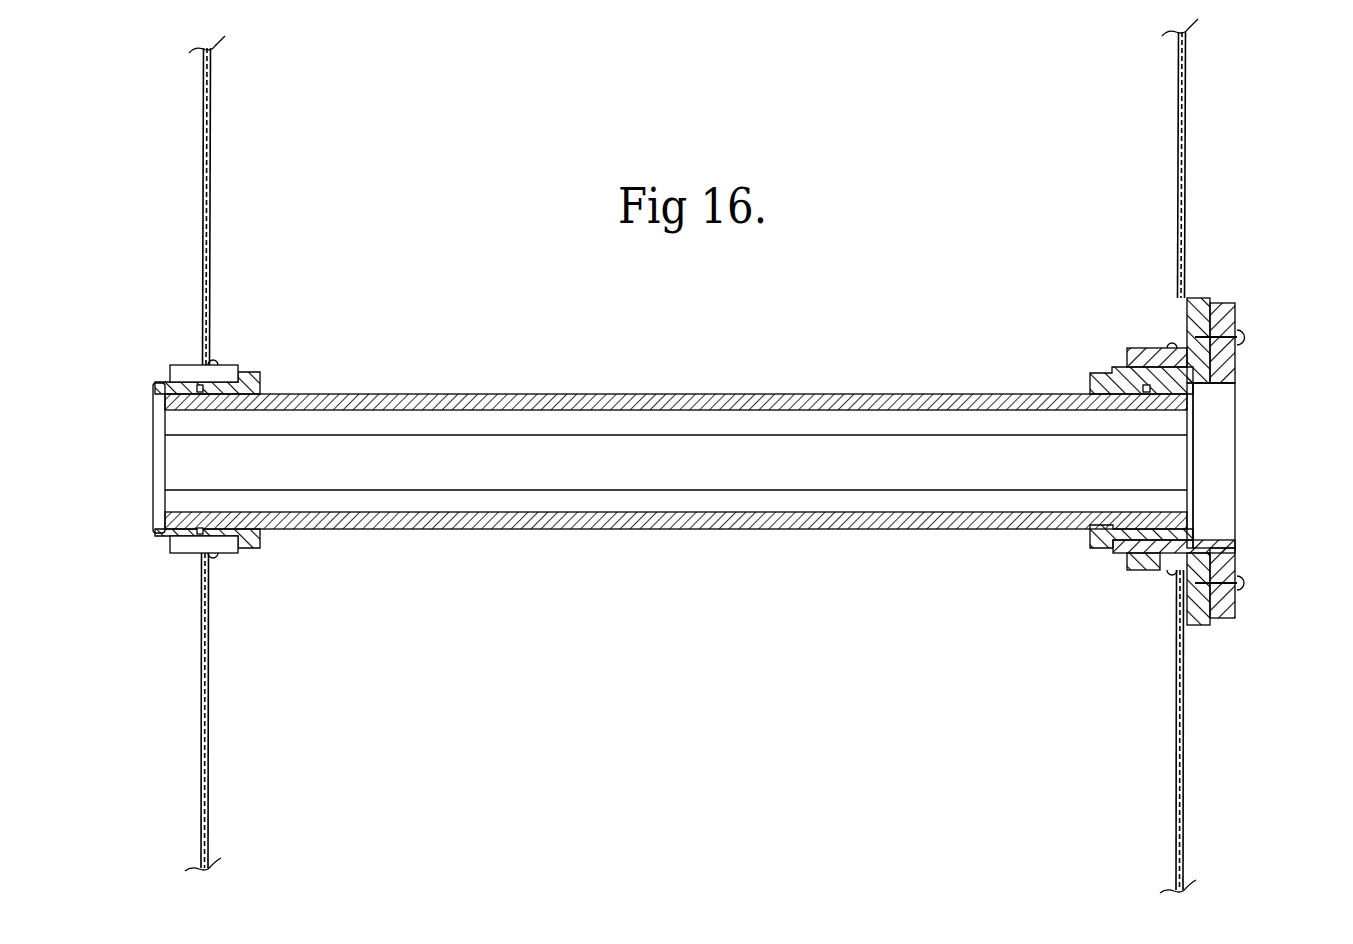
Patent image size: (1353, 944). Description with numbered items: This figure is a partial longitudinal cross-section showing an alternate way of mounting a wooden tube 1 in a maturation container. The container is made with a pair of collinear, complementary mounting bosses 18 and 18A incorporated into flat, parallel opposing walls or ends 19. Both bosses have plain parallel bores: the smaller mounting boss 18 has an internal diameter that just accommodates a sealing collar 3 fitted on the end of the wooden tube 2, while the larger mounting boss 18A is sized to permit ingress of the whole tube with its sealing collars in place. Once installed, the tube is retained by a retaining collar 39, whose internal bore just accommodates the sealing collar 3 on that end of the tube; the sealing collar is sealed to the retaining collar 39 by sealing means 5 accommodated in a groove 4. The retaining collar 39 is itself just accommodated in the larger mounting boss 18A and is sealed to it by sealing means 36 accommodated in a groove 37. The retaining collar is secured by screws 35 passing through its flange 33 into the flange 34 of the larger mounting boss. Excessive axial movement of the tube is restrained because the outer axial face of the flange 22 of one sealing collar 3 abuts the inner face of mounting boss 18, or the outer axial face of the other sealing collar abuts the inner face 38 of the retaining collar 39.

The wooden tube 1 is at (704, 473).
The wooden tube 2 is at (736, 393).
The sealing collar 3 is at (168, 383).
The groove 4 is at (165, 530).
The sealing means 5 is at (200, 540).
The mounting boss 18 is at (220, 366).
The mounting boss 18A is at (1141, 348).
The walls or ends 19 is at (210, 645).
The flange 22 is at (258, 536).
The flange 33 is at (1238, 318).
The flange 34 is at (1200, 298).
The screws 35 is at (1241, 345).
The sealing means 36 is at (1163, 552).
The groove 37 is at (1236, 547).
The inner face 38 is at (1113, 552).
The retaining collar 39 is at (1236, 384).